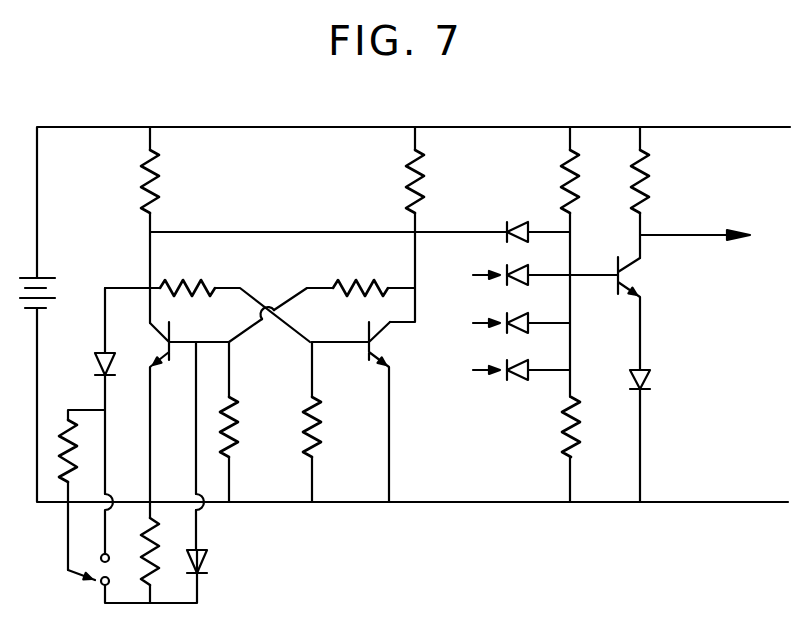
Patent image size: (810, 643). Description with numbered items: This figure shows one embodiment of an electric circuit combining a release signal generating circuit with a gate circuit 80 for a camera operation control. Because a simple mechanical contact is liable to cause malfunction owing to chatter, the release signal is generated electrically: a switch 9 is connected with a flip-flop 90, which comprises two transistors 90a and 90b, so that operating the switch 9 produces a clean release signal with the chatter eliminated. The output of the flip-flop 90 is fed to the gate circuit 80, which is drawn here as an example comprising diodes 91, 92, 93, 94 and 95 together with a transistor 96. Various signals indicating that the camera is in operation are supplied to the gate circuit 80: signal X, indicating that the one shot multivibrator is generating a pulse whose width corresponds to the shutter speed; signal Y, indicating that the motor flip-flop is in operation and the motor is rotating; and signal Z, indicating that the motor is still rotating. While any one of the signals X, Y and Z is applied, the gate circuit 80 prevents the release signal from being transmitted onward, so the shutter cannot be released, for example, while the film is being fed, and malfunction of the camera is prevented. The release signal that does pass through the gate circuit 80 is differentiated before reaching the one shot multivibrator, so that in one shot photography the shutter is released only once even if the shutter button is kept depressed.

The switch 9 is at (73, 572).
The gate circuit 80 is at (698, 118).
The flip-flop 90 is at (413, 118).
The transistor 90a is at (171, 338).
The transistor 90b is at (367, 340).
The diode 91 is at (504, 228).
The diode 92 is at (504, 272).
The diode 93 is at (504, 320).
The diode 94 is at (504, 368).
The diode 95 is at (652, 382).
The transistor 96 is at (642, 279).